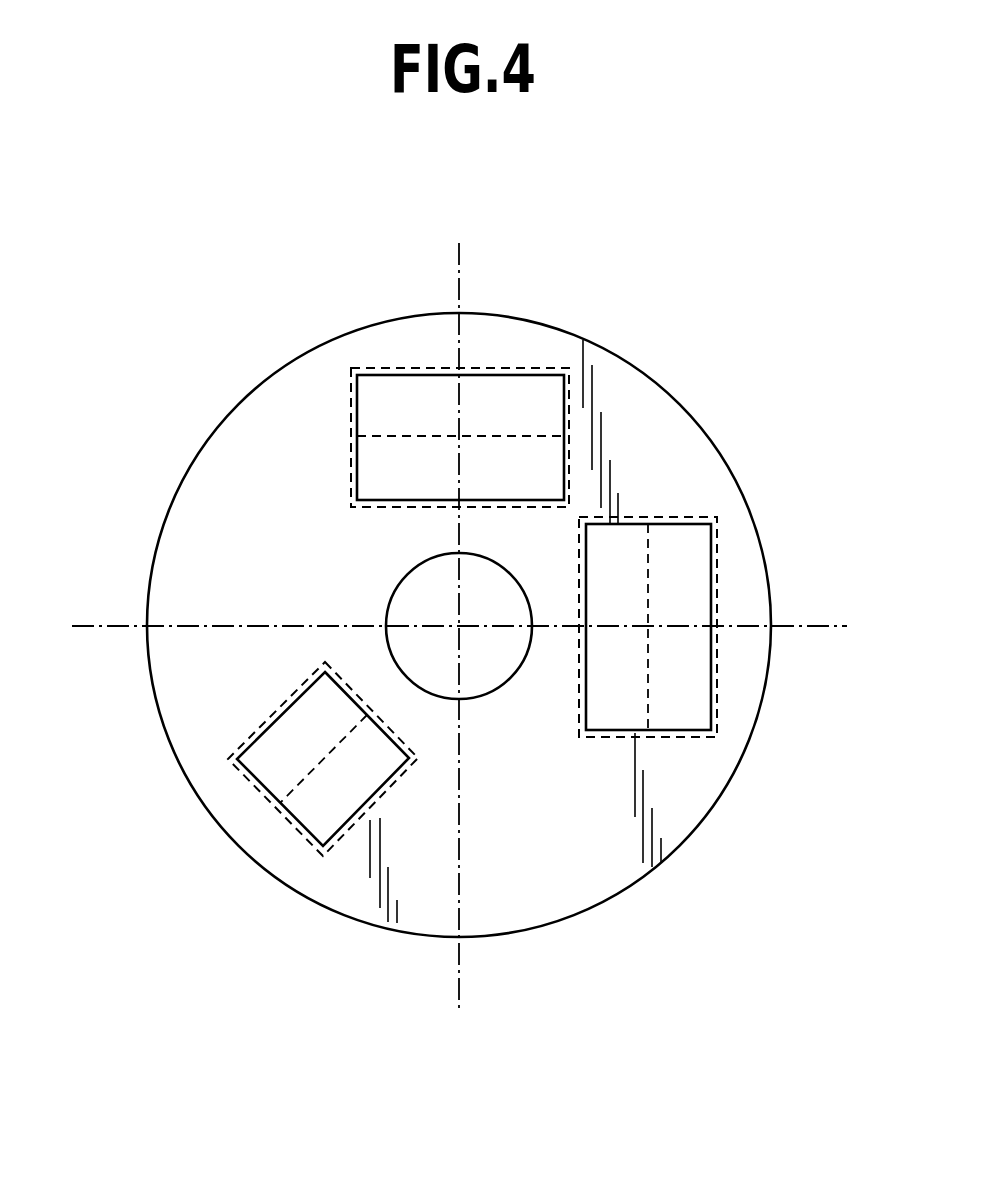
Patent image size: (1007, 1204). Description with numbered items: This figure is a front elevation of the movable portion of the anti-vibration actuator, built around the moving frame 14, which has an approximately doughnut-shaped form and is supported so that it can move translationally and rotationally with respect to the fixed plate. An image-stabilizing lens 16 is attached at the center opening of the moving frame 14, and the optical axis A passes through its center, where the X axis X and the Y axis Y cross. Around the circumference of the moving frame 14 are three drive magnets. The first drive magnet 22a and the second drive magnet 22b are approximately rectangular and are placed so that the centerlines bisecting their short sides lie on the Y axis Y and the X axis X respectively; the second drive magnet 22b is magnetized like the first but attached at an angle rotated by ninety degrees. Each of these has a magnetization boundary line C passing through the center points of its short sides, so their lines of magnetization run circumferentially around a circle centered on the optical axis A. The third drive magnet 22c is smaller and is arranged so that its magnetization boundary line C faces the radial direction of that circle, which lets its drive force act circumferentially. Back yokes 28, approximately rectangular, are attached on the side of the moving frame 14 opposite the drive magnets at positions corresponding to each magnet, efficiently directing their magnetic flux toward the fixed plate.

The moving frame 14 is at (718, 452).
The image-stabilizing lens 16 is at (412, 572).
The first drive magnet 22a is at (412, 367).
The second drive magnet 22b is at (719, 567).
The third drive magnet 22c is at (310, 847).
The back yoke 28 is at (520, 375).
The optical axis A is at (459, 626).
The magnetization boundary line C is at (430, 435).
The X axis X is at (473, 629).
The Y axis Y is at (459, 606).